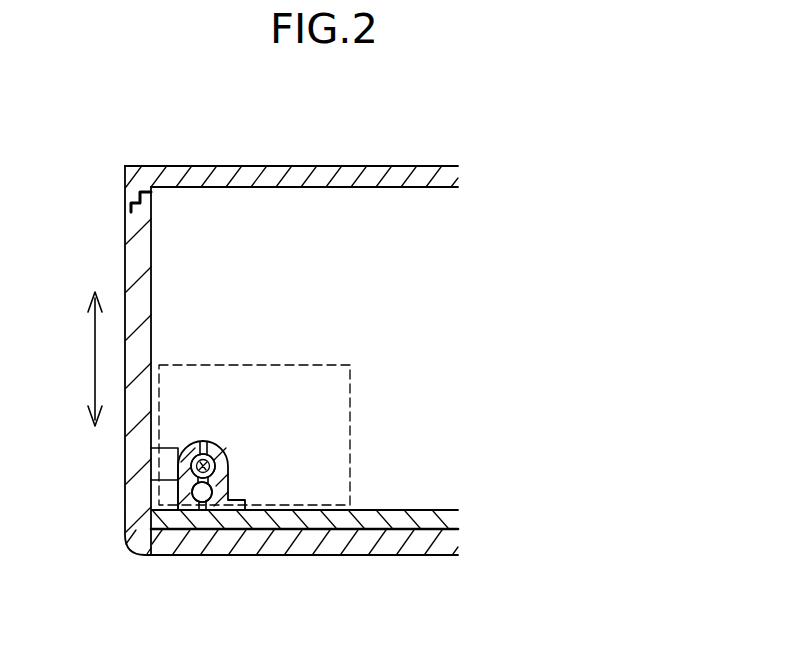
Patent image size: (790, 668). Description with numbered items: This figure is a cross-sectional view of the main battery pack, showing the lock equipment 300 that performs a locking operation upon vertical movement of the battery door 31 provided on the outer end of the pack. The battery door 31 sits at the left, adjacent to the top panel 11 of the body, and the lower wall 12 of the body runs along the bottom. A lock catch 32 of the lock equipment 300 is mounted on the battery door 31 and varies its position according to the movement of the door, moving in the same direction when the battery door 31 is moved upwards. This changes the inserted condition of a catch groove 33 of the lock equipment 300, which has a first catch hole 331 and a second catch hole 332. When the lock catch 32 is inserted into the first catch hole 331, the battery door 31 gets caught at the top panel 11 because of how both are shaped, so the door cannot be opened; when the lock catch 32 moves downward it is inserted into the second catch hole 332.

The top panel 11 is at (258, 180).
The lower case wall 12 is at (333, 557).
The battery door 31 is at (130, 490).
The lock catch 32 is at (167, 453).
The catch groove 33 is at (460, 423).
The first catch hole 331 is at (228, 456).
The second catch hole 332 is at (228, 482).
The lock equipment 300 is at (268, 365).